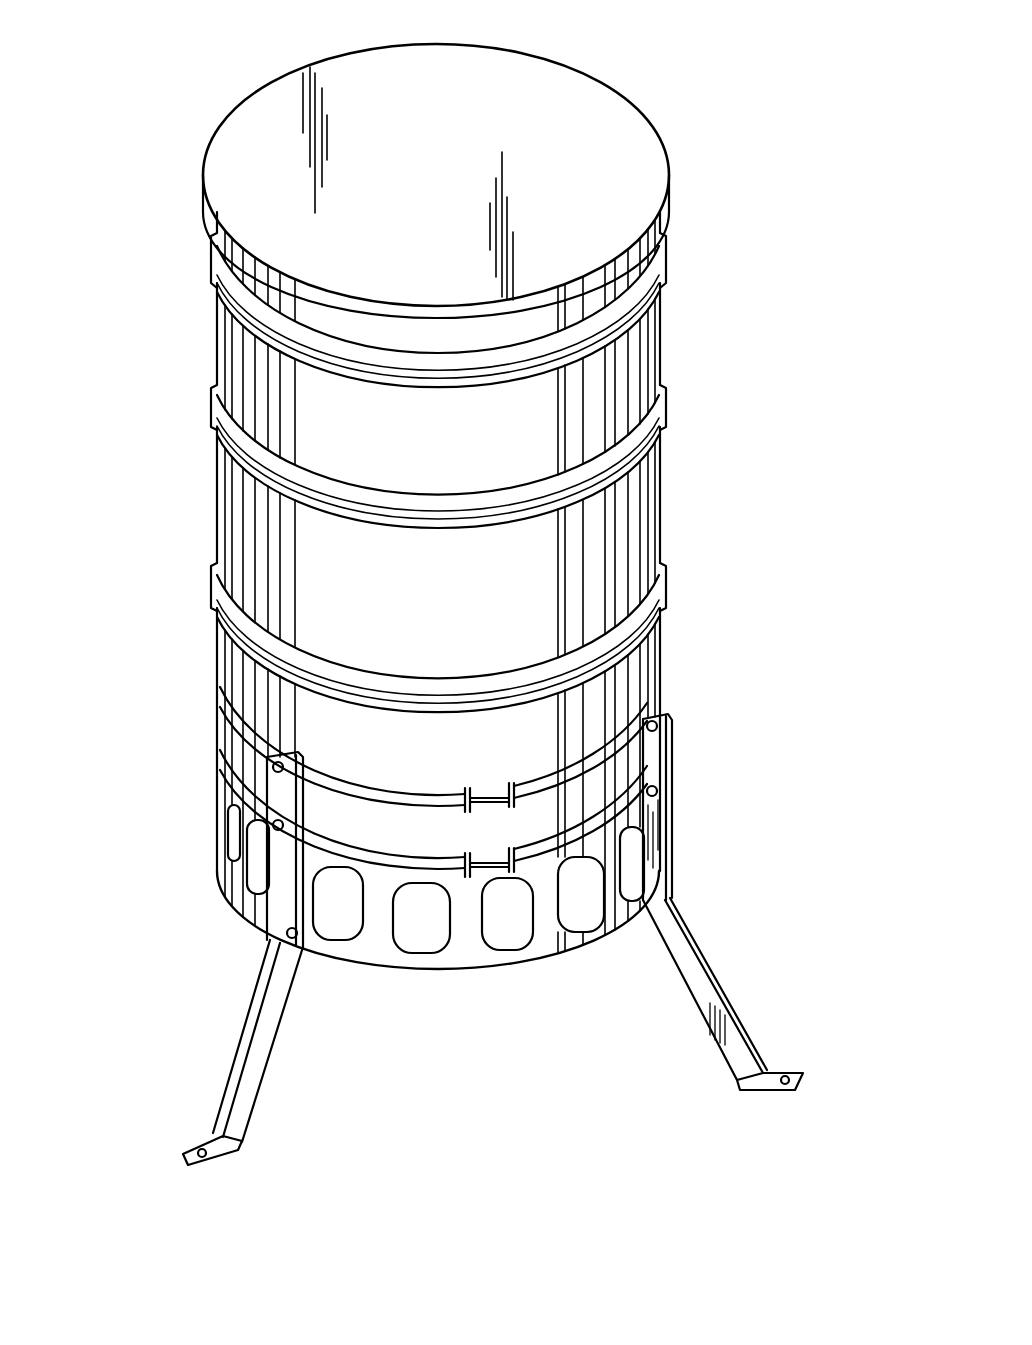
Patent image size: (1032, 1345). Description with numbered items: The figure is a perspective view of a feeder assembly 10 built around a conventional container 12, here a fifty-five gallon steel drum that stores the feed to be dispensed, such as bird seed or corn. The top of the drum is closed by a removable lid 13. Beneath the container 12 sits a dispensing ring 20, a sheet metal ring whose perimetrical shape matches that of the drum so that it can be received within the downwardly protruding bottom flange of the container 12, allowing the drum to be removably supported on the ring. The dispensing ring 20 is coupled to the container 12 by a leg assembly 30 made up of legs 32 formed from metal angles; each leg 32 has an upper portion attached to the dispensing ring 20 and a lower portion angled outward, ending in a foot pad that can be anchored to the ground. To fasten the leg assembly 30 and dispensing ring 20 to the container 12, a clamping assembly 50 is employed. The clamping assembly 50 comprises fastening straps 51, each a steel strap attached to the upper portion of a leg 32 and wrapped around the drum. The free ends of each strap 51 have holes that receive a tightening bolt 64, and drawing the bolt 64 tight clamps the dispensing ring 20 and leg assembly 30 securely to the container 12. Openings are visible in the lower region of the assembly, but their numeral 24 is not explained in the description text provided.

The feeder assembly 10 is at (477, 619).
The container 12 is at (215, 507).
The lid 13 is at (540, 78).
The dispensing ring 20 is at (527, 970).
The air holes 24 is at (499, 934).
The leg assembly 30 is at (477, 592).
The legs 32 is at (744, 986).
The clamping assembly 50 is at (208, 672).
The fastening straps 51 is at (535, 782).
The tightening bolt 64 is at (488, 788).